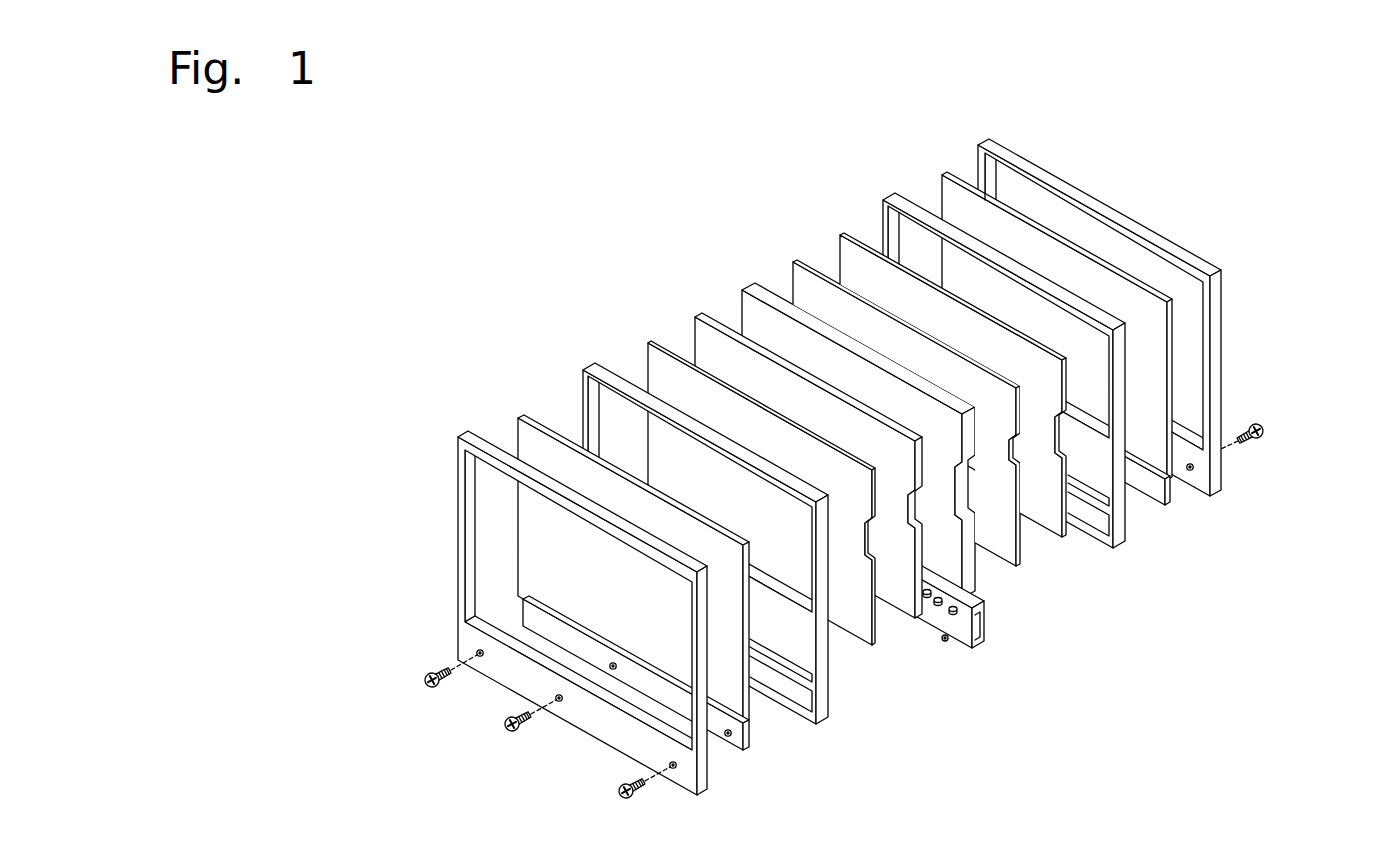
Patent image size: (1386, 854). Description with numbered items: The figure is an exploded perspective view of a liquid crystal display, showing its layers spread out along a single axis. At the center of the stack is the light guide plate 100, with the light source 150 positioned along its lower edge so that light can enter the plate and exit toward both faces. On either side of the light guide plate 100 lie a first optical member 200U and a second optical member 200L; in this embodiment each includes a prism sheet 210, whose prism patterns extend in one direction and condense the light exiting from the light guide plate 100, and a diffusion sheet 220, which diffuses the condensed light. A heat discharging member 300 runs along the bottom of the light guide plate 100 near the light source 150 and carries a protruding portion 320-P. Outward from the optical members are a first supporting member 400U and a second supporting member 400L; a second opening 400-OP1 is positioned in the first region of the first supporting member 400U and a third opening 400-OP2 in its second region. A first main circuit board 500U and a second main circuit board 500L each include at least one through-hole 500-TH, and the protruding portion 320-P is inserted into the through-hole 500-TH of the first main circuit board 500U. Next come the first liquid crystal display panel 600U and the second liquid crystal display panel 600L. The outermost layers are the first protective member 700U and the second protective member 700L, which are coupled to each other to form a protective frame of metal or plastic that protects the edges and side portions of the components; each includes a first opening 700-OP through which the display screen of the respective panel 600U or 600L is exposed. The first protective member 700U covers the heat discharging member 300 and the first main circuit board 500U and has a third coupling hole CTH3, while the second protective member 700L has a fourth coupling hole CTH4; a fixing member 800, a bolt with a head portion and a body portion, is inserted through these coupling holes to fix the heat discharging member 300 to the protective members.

The light guide plate 100 is at (886, 458).
The light source 150 is at (975, 607).
The first optical member 200U is at (665, 228).
The second optical member 200L is at (812, 146).
The prism sheet 210 is at (795, 263).
The diffusion sheet 220 is at (842, 236).
The heat discharging member 300 is at (980, 627).
The protruding portion 320-P is at (946, 641).
The first supporting member 400U is at (585, 371).
The second supporting member 400L is at (885, 201).
The second opening 400-OP1 is at (810, 670).
The third opening 400-OP2 is at (800, 706).
The first main circuit board 500U is at (688, 703).
The second main circuit board 500L is at (1166, 496).
The through-hole 500-TH is at (780, 770).
The first liquid crystal display panel 600U is at (656, 576).
The second liquid crystal display panel 600L is at (1076, 316).
The first protective member 700U is at (582, 604).
The second protective member 700L is at (1108, 286).
The first opening 700-OP is at (471, 513).
The fixing member 800 is at (618, 793).
The third coupling hole CTH3 is at (677, 770).
The fourth coupling hole CTH4 is at (1195, 470).